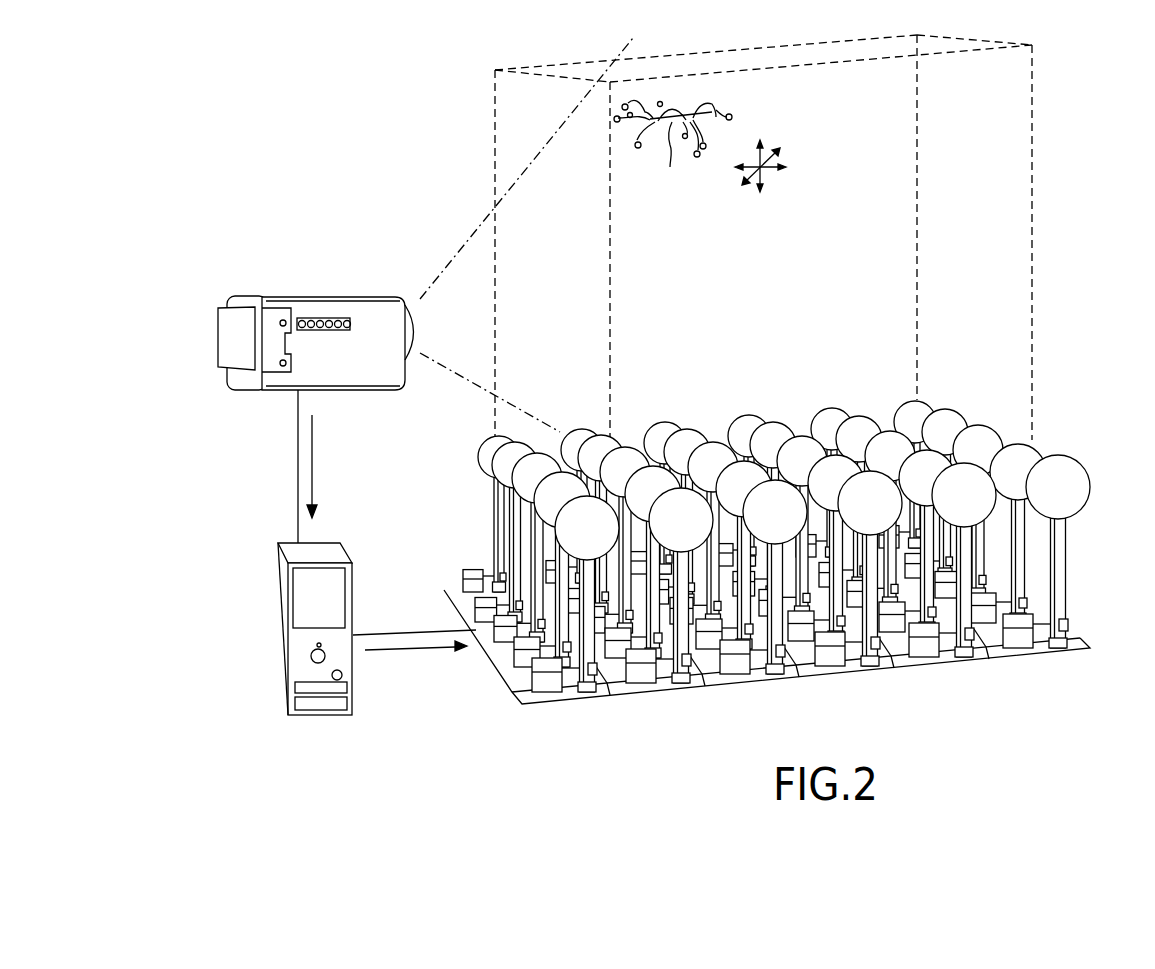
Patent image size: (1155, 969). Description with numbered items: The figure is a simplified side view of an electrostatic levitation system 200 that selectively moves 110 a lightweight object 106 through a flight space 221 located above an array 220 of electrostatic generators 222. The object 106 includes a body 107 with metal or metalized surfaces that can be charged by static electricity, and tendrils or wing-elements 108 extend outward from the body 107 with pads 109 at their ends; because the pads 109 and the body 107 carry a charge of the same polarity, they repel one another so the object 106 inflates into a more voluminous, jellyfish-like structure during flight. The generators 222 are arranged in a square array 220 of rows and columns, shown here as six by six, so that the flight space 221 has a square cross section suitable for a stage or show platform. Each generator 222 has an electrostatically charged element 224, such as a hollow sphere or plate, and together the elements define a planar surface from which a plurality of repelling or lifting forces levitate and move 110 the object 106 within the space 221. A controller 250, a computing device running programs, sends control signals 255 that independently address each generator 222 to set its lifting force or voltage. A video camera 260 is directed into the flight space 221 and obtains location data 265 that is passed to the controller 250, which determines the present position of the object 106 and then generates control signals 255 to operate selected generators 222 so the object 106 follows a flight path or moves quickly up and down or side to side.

The lightweight object 106 is at (678, 92).
The body 107 is at (667, 159).
The wing-elements 108 is at (710, 103).
The pads 109 is at (727, 110).
The movement 110 is at (763, 170).
The electrostatic levitation system 200 is at (1062, 112).
The array 220 is at (797, 589).
The flight space 221 is at (993, 159).
The electrostatic generators 222 is at (592, 722).
The electrostatically charged element 224 is at (603, 541).
The controller 250 is at (242, 711).
The control signals 255 is at (405, 650).
The video camera 260 is at (306, 264).
The location data 265 is at (355, 470).